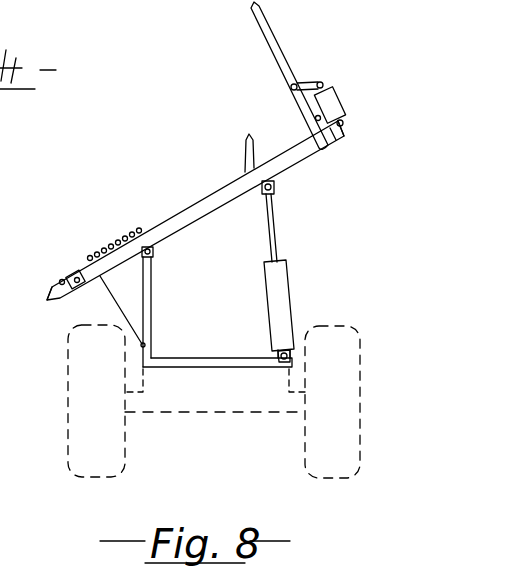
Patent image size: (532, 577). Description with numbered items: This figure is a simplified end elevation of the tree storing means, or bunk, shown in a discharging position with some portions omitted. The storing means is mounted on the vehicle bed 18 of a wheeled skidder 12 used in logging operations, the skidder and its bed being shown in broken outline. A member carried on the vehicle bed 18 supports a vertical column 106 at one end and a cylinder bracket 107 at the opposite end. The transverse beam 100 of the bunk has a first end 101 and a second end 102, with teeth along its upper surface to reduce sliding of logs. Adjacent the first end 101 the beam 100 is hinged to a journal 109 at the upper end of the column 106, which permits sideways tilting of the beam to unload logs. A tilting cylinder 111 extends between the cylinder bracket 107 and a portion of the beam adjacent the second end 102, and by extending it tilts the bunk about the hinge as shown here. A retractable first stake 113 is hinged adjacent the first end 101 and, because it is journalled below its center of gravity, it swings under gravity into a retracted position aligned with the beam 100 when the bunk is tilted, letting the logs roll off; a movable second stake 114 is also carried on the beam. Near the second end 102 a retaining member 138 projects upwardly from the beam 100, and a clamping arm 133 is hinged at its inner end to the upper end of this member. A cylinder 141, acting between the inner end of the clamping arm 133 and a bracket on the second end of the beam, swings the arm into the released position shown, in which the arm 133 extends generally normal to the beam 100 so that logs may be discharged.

The skidder 12 is at (370, 378).
The vehicle bed 18 is at (180, 395).
The beam 100 is at (195, 199).
The first end 101 is at (77, 275).
The second end 102 is at (322, 140).
The vertical column 106 is at (153, 310).
The cylinder bracket 107 is at (278, 356).
The journal 109 is at (154, 252).
The tilting cylinder 111 is at (282, 312).
The first stake 113 is at (59, 289).
The second stake 114 is at (245, 142).
The clamping arm 133 is at (276, 31).
The retaining member 138 is at (313, 119).
The cylinder 141 is at (338, 104).